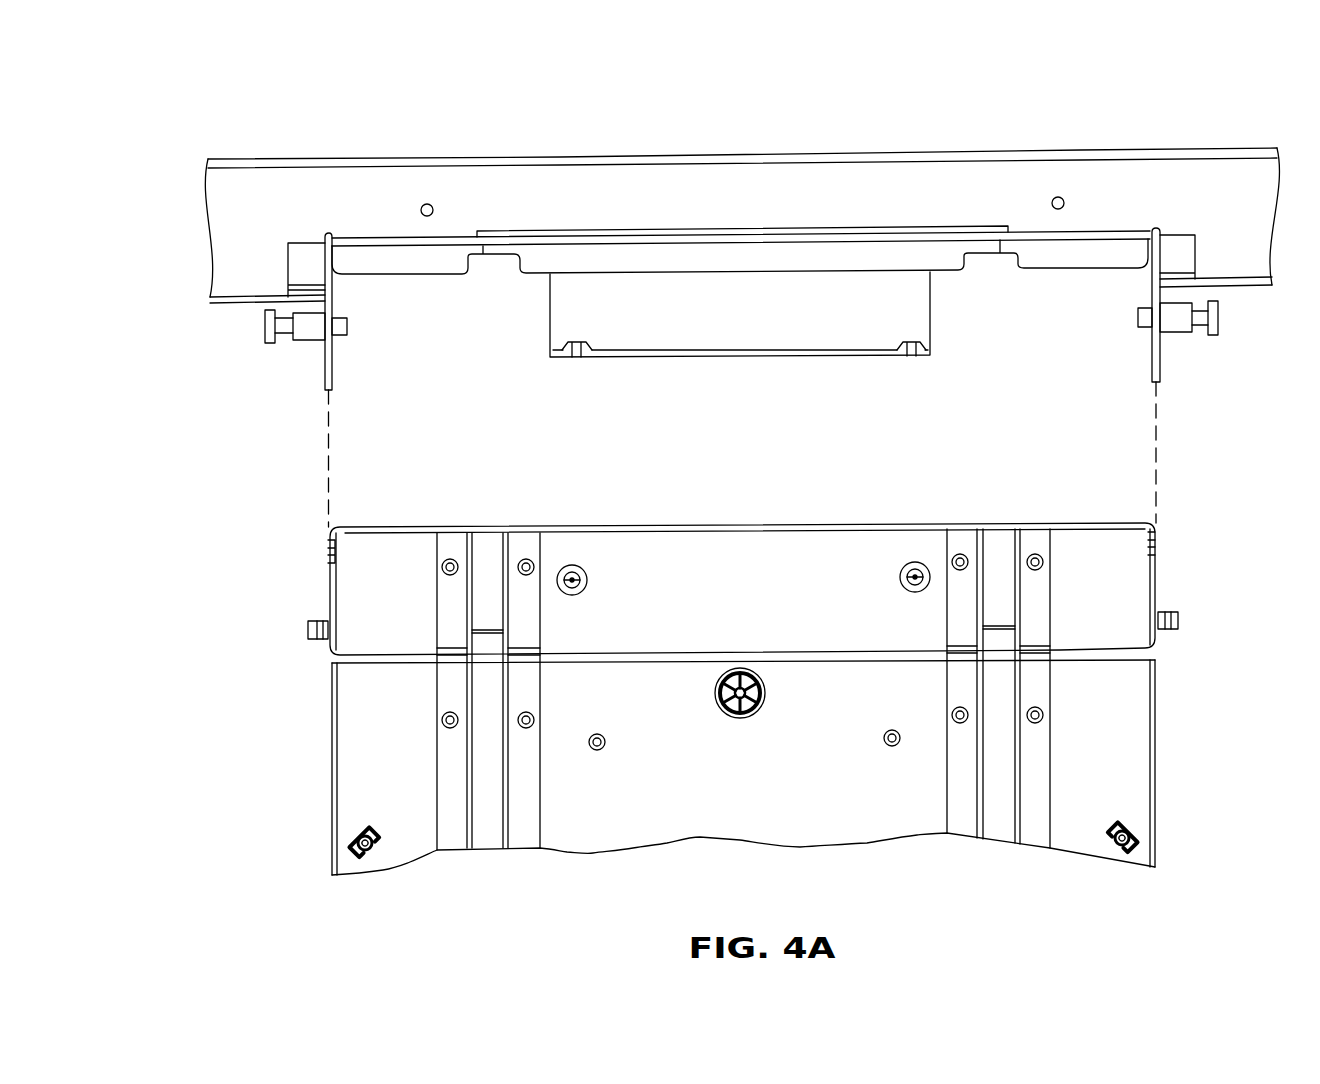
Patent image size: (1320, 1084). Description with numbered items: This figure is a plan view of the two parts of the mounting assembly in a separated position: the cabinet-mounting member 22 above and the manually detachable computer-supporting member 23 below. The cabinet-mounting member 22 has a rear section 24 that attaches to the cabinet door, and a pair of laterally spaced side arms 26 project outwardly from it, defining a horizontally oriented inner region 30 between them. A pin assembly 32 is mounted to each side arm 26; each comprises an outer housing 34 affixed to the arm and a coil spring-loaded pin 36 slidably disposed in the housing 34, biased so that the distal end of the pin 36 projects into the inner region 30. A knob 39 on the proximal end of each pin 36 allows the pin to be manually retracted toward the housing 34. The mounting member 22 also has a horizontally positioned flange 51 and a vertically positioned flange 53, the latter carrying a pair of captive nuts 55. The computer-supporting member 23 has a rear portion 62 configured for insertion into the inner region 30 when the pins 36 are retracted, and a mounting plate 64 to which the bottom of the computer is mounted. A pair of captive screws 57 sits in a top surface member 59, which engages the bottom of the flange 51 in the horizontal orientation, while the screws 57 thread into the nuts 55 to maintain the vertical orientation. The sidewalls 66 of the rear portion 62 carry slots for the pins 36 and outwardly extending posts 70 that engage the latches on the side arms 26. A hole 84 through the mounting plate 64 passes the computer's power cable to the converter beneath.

The cabinet-mounting member 22 is at (1032, 147).
The computer-supporting member 23 is at (743, 672).
The rear section 24 is at (603, 178).
The side arms 26 is at (325, 372).
The inner region 30 is at (730, 346).
The pin assemblies 32 is at (741, 319).
The outer housing 34 is at (311, 336).
The spring-loaded pin 36 is at (347, 326).
The knob 39 is at (265, 326).
The horizontally positioned flange 51 is at (548, 266).
The vertically positioned flange 53 is at (640, 358).
The captive nuts 55 is at (575, 358).
The captive screws 57 is at (572, 565).
The top surface member 59 is at (743, 589).
The rear portion 62 is at (788, 540).
The mounting plate 64 is at (743, 767).
The sidewalls 66 is at (330, 590).
The posts 70 is at (308, 630).
The hole 84 is at (715, 693).